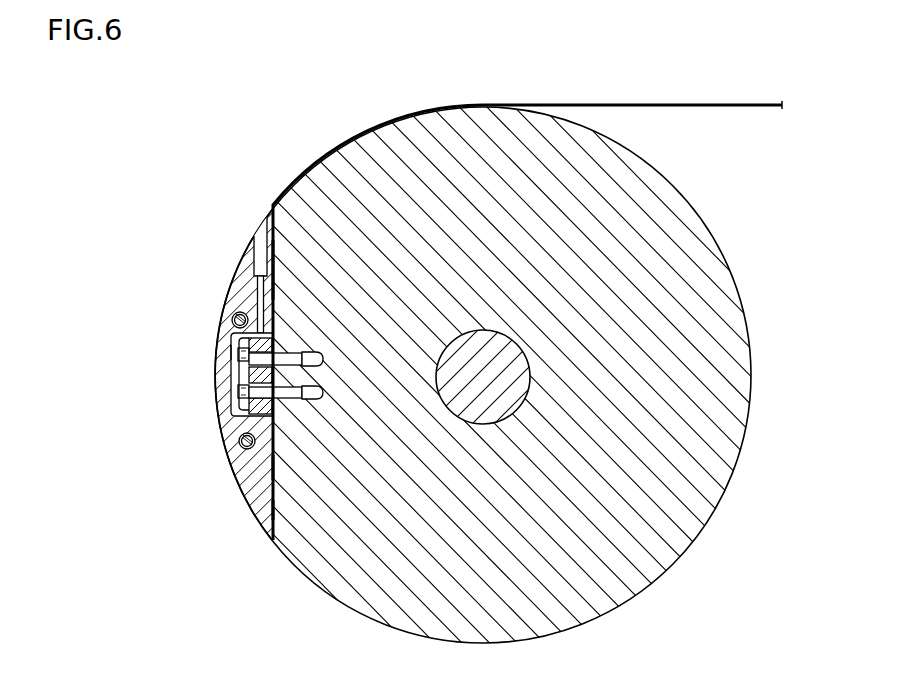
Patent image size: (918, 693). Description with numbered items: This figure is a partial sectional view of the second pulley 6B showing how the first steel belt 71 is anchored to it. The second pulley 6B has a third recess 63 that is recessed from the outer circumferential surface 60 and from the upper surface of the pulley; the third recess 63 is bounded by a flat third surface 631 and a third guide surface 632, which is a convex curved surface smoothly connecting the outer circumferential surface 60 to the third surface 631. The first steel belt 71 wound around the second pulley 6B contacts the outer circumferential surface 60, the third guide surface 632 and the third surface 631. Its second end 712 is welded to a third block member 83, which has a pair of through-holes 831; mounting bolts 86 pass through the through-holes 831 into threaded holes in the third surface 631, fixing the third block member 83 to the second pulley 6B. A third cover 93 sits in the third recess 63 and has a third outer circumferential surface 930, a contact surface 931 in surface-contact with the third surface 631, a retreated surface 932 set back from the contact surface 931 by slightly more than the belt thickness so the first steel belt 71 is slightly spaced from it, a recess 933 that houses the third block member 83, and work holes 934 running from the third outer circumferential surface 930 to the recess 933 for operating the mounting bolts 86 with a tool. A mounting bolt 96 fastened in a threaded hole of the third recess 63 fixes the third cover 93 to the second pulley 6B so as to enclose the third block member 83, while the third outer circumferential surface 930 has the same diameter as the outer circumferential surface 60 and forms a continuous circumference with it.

The outer circumferential surface 60 is at (343, 143).
The first steel belt 71 is at (703, 104).
The third recess 63 is at (255, 520).
The third guide surface 632 is at (281, 197).
The third surface 631 is at (276, 465).
The third block member 83 is at (244, 410).
The through-holes 831 is at (238, 393).
The mounting bolts 86 is at (238, 352).
The third cover 93 is at (243, 467).
The third outer circumferential surface 930 is at (222, 290).
The contact surface 931 is at (276, 508).
The retreated surface 932 is at (272, 268).
The recess 933 is at (250, 414).
The work holes 934 is at (226, 374).
The mounting bolt 96 is at (238, 446).
The second end 712 is at (265, 345).
The second pulley 6B is at (718, 389).